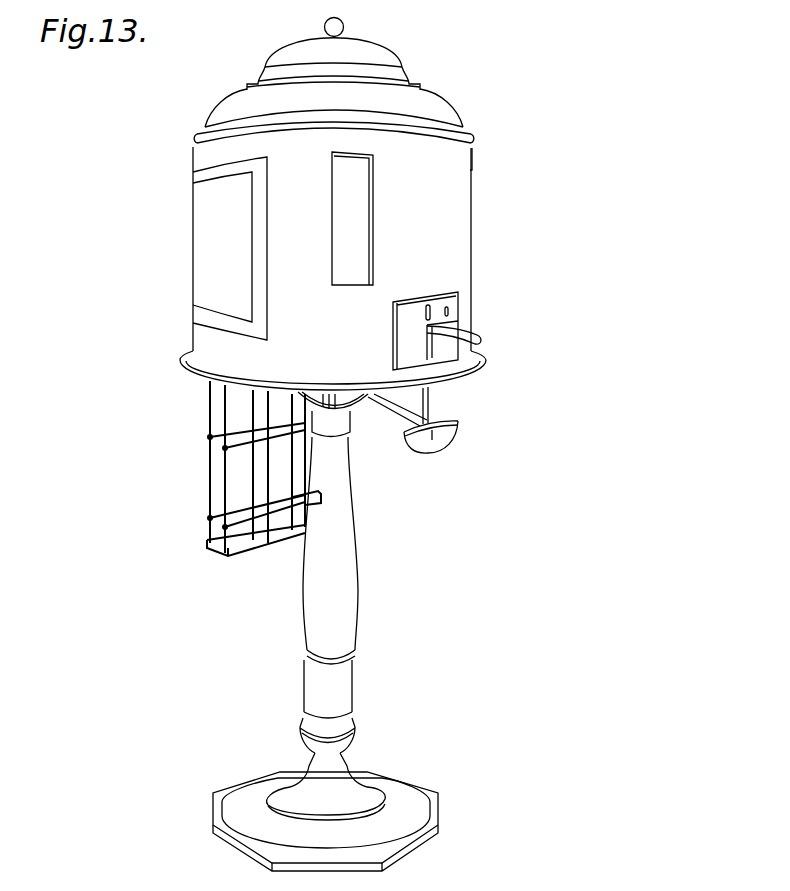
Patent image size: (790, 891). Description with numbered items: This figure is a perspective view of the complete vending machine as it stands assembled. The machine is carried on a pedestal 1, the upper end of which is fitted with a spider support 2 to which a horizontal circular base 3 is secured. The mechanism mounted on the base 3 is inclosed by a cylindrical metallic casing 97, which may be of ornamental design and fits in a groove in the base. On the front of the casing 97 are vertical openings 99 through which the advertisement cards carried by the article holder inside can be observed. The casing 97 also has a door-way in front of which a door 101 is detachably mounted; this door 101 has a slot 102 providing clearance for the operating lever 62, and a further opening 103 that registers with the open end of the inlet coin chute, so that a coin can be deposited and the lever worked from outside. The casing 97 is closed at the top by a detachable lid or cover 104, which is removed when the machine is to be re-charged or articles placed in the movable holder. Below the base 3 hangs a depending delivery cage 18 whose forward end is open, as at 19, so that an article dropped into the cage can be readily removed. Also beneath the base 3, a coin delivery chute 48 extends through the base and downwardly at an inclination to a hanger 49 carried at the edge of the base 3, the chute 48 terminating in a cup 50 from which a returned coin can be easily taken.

The pedestal 1 is at (349, 550).
The spider support 2 is at (367, 412).
The circular base 3 is at (469, 368).
The delivery cage 18 is at (210, 468).
The open forward end of delivery cage 19 is at (242, 447).
The coin delivery chute 48 is at (402, 416).
The hanger 49 is at (431, 400).
The cup 50 is at (447, 443).
The operating lever 62 is at (481, 336).
The cylindrical metallic casing 97 is at (452, 240).
The vertical openings 99 is at (472, 182).
The door 101 is at (458, 320).
The slot 102 is at (404, 343).
The opening 103 is at (424, 312).
The detachable lid or cover 104 is at (437, 110).